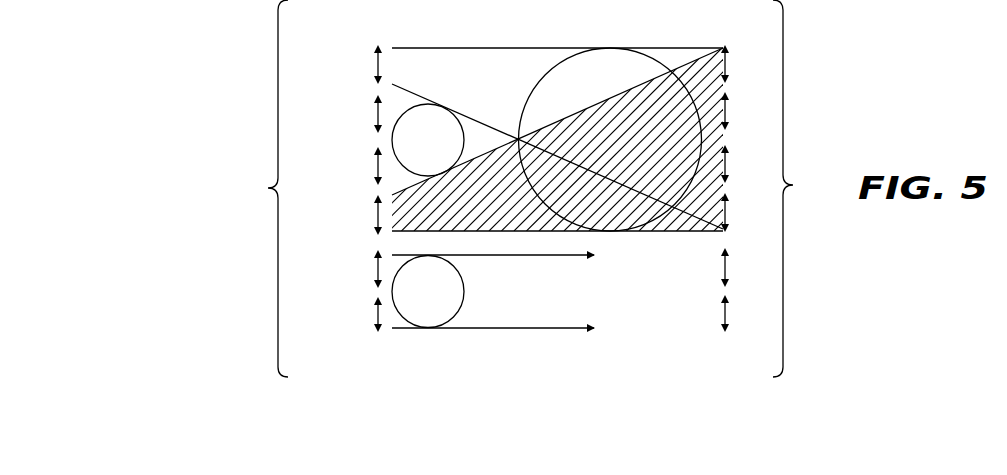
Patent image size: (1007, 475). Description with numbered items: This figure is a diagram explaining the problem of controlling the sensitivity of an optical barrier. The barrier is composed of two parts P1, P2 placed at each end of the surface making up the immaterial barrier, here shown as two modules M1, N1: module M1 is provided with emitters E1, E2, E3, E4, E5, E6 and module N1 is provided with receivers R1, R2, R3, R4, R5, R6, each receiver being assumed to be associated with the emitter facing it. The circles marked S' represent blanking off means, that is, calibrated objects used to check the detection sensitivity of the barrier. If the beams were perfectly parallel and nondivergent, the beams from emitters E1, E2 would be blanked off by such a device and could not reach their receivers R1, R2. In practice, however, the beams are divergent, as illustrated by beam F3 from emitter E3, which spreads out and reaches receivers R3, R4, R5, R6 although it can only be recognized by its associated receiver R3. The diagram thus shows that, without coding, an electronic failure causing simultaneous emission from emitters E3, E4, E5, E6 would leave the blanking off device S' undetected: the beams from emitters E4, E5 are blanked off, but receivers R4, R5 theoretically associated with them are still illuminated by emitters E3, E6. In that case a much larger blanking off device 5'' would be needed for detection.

The emitter E1 is at (340, 316).
The emitter E2 is at (340, 266).
The emitter E3 is at (340, 213).
The emitter E4 is at (340, 164).
The emitter E5 is at (340, 111).
The emitter E6 is at (340, 61).
The receiver R1 is at (743, 315).
The receiver R2 is at (743, 264).
The receiver R3 is at (743, 210).
The receiver R4 is at (743, 162).
The receiver R5 is at (743, 109).
The receiver R6 is at (743, 60).
The part of optical barrier P1 is at (329, 353).
The part of optical barrier P2 is at (737, 352).
The module M1 is at (260, 188).
The module N1 is at (800, 188).
The beam F3 is at (562, 139).
The blanking off means S' is at (428, 216).
The blanking off device 5'' is at (610, 139).